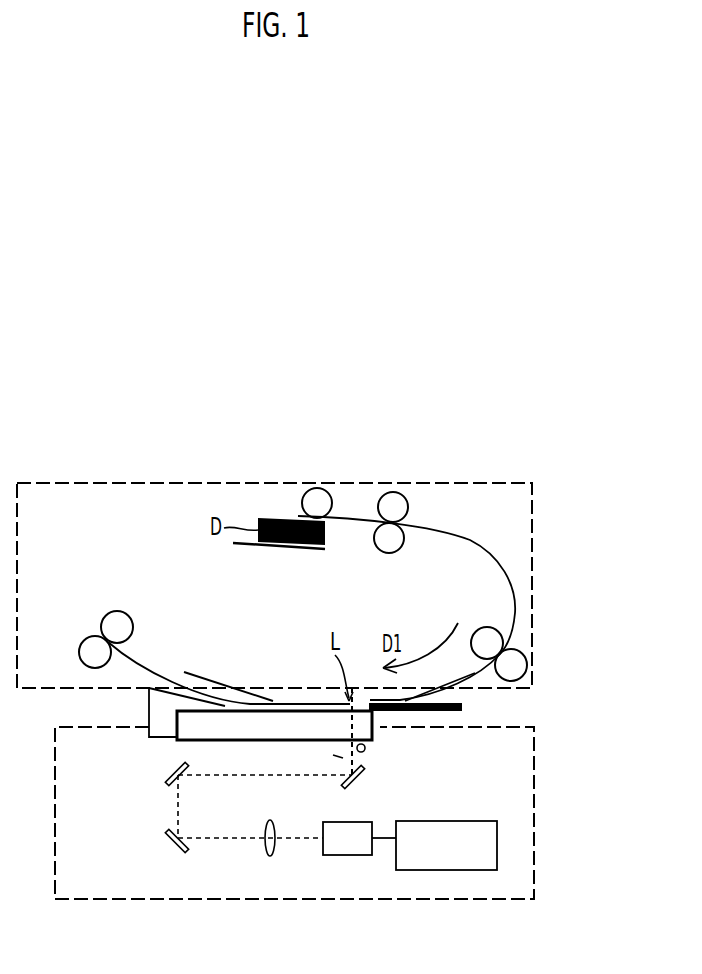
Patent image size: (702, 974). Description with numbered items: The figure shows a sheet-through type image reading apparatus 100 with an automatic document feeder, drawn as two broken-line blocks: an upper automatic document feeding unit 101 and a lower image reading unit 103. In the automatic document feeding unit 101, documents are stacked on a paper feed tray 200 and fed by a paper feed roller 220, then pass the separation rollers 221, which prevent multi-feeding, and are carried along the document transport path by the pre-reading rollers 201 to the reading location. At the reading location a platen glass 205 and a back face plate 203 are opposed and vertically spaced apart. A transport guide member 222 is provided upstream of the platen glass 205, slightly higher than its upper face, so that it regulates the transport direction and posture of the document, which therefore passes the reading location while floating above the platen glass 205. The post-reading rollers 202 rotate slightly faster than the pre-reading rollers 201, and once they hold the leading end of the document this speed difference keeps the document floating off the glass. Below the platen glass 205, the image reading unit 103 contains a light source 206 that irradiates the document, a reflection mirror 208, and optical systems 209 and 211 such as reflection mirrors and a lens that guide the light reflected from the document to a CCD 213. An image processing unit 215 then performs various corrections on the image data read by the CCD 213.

The image reading apparatus 100 is at (297, 294).
The automatic document feeding unit 101 is at (527, 513).
The image reading unit 103 is at (520, 858).
The paper feed tray 200 is at (290, 549).
The pre-reading rollers 201 is at (520, 667).
The post-reading rollers 202 is at (117, 612).
The back face plate 203 is at (188, 670).
The platen glass 205 is at (275, 742).
The light source 206 is at (366, 749).
The reflection mirror 208 is at (333, 755).
The optical system 209 is at (170, 838).
The optical system 211 is at (270, 857).
The CCD 213 is at (347, 856).
The image processing unit 215 is at (445, 871).
The paper feed roller 220 is at (318, 489).
The separation rollers 221 is at (394, 492).
The transport guide member 222 is at (462, 707).